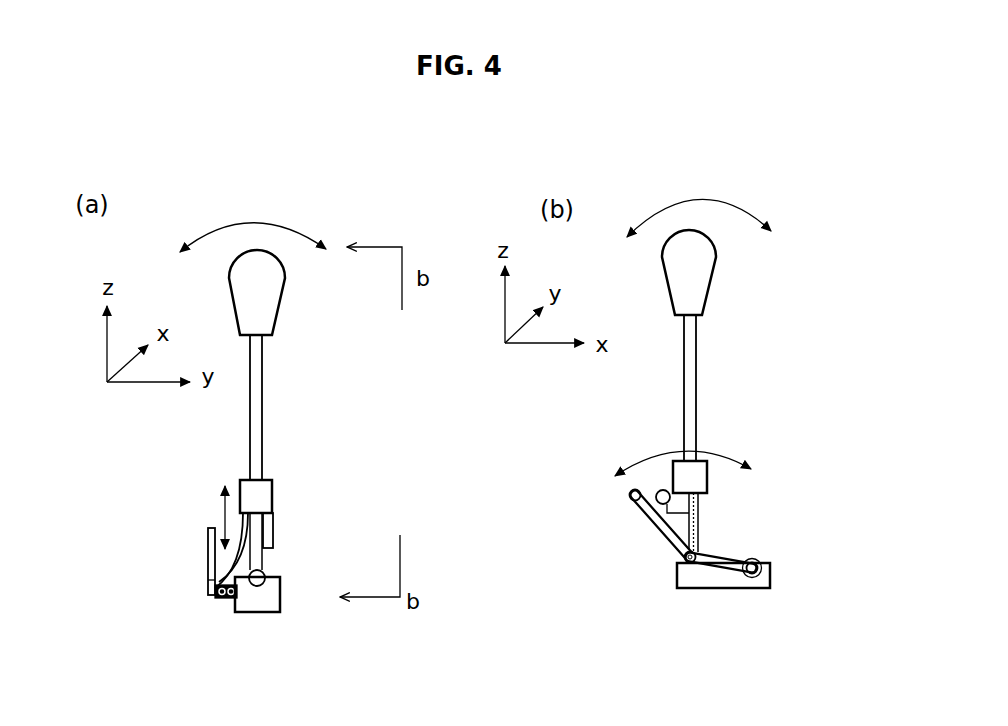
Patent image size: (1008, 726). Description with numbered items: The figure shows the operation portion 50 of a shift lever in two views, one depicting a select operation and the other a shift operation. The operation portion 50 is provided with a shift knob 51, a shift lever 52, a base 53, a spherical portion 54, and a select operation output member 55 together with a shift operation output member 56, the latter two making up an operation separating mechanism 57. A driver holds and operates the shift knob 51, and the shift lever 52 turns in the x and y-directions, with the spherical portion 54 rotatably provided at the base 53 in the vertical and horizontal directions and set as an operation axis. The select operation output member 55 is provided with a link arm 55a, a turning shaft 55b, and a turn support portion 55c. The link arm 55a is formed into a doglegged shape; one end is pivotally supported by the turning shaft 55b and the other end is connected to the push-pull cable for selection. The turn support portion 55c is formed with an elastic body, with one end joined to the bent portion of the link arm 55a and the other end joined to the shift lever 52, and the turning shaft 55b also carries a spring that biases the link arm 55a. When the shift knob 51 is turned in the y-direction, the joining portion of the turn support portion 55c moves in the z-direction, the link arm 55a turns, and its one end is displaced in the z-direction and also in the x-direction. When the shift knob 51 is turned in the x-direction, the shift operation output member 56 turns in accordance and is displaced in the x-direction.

The operation portion 50 is at (322, 296).
The shift knob 51 is at (256, 285).
The shift lever 52 is at (262, 413).
The base 53 is at (268, 581).
The spherical portion 54 is at (263, 587).
The select operation output member 55 is at (196, 521).
The link arm 55a is at (210, 592).
The turning shaft 55b is at (208, 545).
The turn support portion 55c is at (237, 597).
The shift operation output member 56 is at (267, 527).
The operation separating mechanism 57 is at (275, 451).